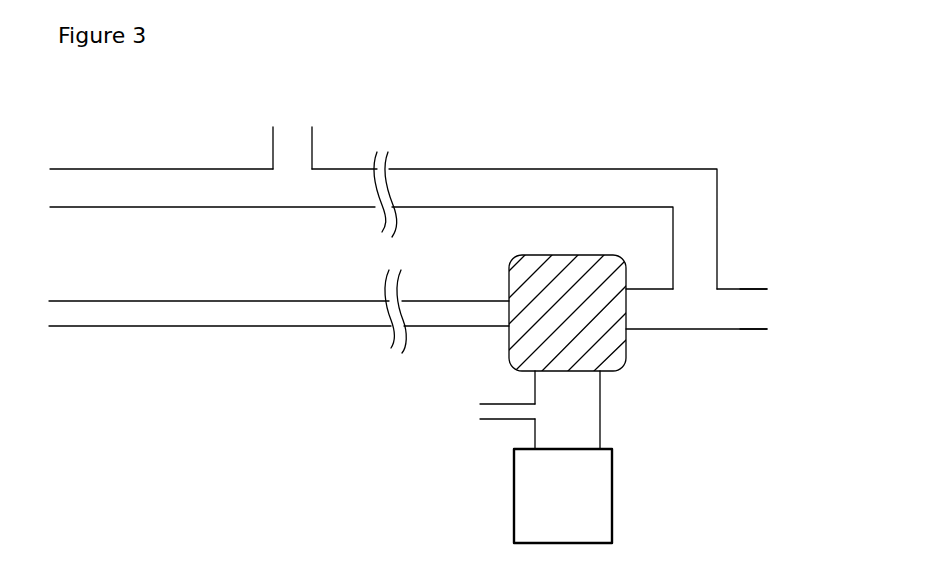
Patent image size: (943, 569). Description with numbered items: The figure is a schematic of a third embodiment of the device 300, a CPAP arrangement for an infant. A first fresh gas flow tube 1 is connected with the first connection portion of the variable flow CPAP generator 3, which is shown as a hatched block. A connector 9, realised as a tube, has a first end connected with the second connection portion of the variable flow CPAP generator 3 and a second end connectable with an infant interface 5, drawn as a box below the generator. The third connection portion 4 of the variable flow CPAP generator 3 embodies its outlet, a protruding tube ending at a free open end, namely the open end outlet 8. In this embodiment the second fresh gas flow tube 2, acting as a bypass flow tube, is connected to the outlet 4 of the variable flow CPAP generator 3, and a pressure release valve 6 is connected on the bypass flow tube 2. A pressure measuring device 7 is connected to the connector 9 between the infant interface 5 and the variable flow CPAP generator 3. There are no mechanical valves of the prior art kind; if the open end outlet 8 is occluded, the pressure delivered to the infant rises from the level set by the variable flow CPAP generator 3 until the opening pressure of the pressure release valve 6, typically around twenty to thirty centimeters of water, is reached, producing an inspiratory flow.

The device 300 is at (557, 119).
The first fresh gas flow tube 1 is at (110, 313).
The second fresh gas flow tube 2 is at (115, 187).
The variable flow CPAP generator 3 is at (600, 353).
The third connection portion 4 is at (652, 313).
The infant interface 5 is at (593, 519).
The pressure release valve 6 is at (292, 150).
The pressure measuring device 7 is at (488, 410).
The open end outlet 8 is at (763, 307).
The connector 9 is at (583, 420).